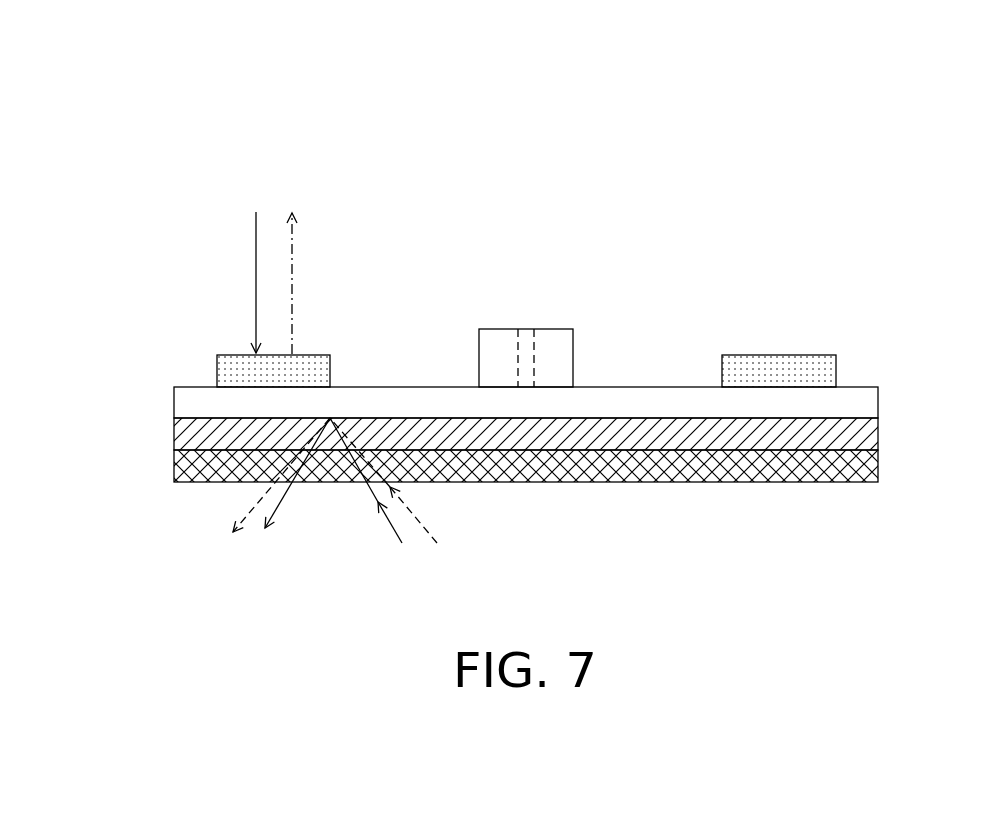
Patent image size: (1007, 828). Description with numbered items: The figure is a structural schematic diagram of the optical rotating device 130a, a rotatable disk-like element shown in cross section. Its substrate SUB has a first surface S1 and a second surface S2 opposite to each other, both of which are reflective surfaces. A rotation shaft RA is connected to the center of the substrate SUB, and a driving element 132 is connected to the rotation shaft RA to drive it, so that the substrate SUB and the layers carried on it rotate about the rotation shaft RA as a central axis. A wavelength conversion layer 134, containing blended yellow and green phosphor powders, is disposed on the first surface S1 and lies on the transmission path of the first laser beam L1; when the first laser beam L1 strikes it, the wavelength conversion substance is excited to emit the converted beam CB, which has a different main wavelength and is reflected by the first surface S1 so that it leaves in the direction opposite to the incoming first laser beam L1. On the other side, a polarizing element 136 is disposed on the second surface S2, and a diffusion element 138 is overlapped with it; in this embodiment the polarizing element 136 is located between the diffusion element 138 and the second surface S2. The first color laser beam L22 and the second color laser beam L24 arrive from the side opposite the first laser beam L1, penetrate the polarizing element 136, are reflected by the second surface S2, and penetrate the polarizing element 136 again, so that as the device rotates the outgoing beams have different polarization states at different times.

The optical rotating device 130a is at (814, 126).
The driving element 132 is at (490, 366).
The wavelength conversion layer 134 is at (232, 365).
The polarizing element 136 is at (870, 437).
The diffusion element 138 is at (870, 472).
The substrate SUB is at (870, 397).
The first surface S1 is at (652, 386).
The second surface S2 is at (701, 421).
The rotation shaft RA is at (524, 340).
The converted beam CB is at (292, 270).
The first laser beam L1 is at (256, 260).
The first color laser beam L22 is at (392, 528).
The second color laser beam L24 is at (417, 505).